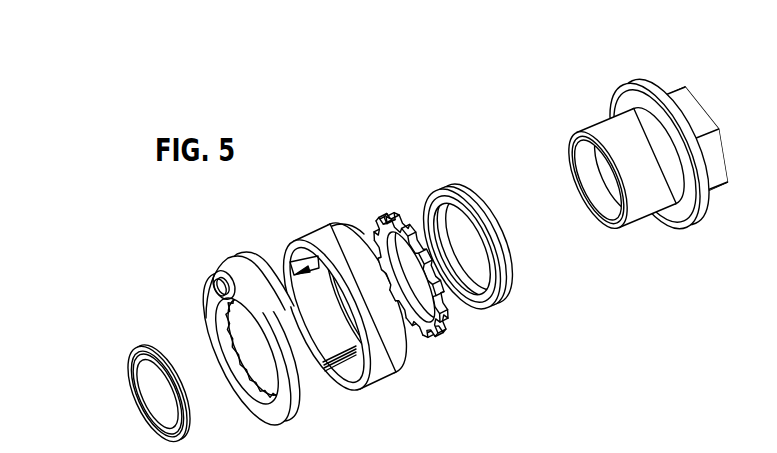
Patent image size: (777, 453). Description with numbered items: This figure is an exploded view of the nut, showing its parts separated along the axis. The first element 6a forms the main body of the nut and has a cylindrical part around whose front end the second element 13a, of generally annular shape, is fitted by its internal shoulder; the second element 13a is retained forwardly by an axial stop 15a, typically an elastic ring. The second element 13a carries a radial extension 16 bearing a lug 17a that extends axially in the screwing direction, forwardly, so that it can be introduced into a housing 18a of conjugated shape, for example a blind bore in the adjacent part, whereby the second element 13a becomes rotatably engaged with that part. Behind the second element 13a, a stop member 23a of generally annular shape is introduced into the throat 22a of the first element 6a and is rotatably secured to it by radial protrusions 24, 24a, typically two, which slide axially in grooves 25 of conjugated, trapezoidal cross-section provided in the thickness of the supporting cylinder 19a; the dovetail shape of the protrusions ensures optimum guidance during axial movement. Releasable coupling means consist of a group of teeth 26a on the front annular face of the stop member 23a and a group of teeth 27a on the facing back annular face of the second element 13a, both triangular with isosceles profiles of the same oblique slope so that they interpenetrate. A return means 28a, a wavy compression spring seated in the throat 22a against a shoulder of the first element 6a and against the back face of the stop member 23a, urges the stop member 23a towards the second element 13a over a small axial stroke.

The first element 6a is at (655, 60).
The second element 13a is at (217, 310).
The axial stop 15a is at (112, 350).
The radial extension 16 is at (236, 260).
The lug 17a is at (216, 286).
The housing 18a is at (182, 5).
The supporting cylinder 19a is at (339, 301).
The throat 22a is at (543, 447).
The stop member 23a is at (413, 269).
The radial protrusion 24 is at (437, 352).
The radial protrusion 24a is at (397, 196).
The grooves 25 is at (295, 258).
The teeth 26a is at (364, 218).
The teeth 27a is at (262, 340).
The return means 28a is at (478, 172).